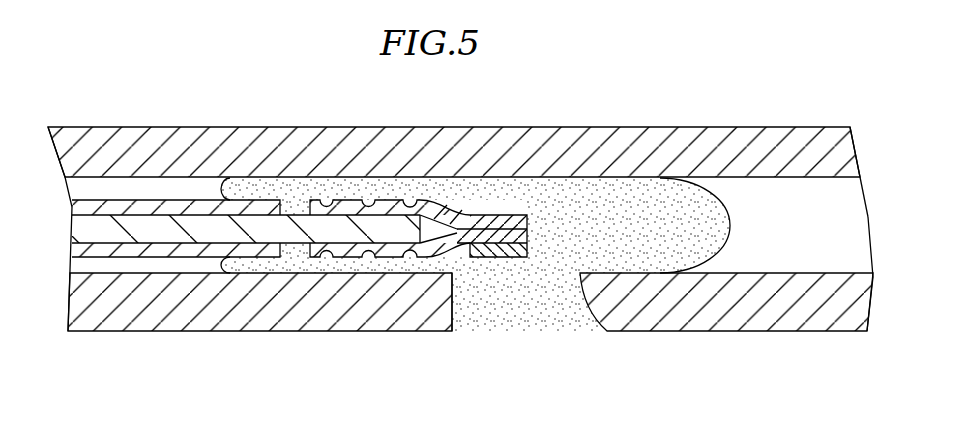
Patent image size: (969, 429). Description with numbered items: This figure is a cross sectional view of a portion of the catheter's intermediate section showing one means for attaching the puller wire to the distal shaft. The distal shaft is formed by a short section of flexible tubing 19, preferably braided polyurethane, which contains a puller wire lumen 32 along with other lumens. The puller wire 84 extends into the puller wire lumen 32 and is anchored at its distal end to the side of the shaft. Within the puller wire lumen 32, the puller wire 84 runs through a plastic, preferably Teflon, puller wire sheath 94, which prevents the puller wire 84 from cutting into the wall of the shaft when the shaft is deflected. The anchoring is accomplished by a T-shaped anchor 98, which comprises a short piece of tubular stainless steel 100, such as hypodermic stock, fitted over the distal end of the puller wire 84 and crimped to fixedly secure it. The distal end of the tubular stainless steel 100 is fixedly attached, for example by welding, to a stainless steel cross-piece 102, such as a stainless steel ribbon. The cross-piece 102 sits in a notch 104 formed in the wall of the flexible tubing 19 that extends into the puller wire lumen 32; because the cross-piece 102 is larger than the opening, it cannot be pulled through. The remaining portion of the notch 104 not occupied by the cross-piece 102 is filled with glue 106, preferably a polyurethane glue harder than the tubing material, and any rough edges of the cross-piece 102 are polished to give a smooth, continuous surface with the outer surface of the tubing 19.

The tubing 19 is at (757, 333).
The puller wire lumen 32 is at (840, 205).
The puller wire 84 is at (102, 231).
The puller wire sheath 94 is at (75, 205).
The T-shaped anchor 98 is at (510, 205).
The tubular stainless steel 100 is at (333, 264).
The cross-piece 102 is at (497, 257).
The notch 104 is at (455, 303).
The glue 106 is at (553, 310).